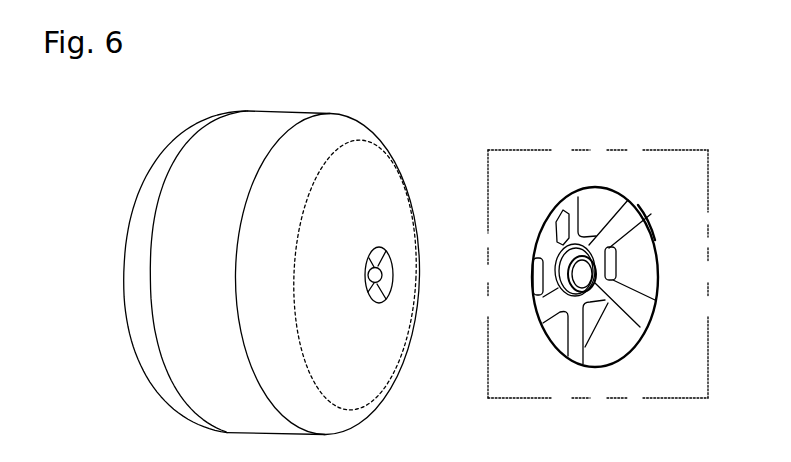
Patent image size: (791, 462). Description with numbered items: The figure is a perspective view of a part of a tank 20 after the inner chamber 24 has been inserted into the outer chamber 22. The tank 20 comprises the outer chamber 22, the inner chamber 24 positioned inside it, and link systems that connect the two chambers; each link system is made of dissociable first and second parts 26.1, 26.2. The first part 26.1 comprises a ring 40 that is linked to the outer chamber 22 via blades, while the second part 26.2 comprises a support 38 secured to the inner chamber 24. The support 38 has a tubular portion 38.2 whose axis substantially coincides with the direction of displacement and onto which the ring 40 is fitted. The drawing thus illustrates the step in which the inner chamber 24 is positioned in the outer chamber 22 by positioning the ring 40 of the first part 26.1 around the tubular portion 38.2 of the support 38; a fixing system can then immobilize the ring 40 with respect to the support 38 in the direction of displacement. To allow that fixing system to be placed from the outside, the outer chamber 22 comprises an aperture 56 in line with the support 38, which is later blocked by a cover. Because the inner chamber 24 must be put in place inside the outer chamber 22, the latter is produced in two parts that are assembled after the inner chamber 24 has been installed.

The tank 20 is at (132, 167).
The outer chamber 22 is at (302, 137).
The inner chamber 24 is at (658, 254).
The first part 26.1 is at (603, 218).
The second part 26.2 is at (608, 287).
The support 38 is at (557, 296).
The tubular portion 38.2 is at (595, 263).
The ring 40 is at (555, 243).
The aperture 56 is at (652, 221).